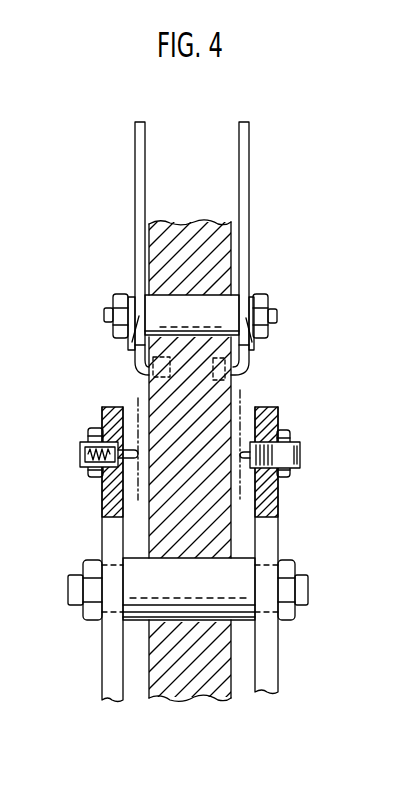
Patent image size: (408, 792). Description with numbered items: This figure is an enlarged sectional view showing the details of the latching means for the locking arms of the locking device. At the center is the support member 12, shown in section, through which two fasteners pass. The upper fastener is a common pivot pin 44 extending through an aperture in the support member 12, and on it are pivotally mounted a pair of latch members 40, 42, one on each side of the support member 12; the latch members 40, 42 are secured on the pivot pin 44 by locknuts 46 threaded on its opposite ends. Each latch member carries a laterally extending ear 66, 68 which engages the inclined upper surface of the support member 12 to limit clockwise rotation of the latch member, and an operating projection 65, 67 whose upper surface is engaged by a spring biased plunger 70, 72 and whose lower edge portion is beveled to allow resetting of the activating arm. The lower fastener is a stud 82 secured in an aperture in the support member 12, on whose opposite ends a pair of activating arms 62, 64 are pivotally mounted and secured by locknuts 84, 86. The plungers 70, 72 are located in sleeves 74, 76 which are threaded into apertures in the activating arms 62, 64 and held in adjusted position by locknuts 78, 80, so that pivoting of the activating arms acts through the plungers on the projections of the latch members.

The support member 12 is at (173, 688).
The latch member 40 is at (243, 157).
The latch member 42 is at (137, 143).
The pivot pin 44 is at (104, 315).
The locknuts 46 is at (116, 293).
The activating arm 62 is at (270, 526).
The activating arm 64 is at (110, 522).
The operating projection 65 is at (256, 338).
The laterally extending ear 66 is at (240, 382).
The operating projection 67 is at (134, 321).
The laterally extending ear 68 is at (150, 380).
The spring biased plunger 70 is at (245, 468).
The spring biased plunger 72 is at (104, 480).
The sleeve 74 is at (300, 453).
The sleeve 76 is at (80, 449).
The locknut 78 is at (285, 430).
The locknut 80 is at (97, 428).
The stud 82 is at (137, 623).
The locknut 84 is at (282, 620).
The locknut 86 is at (93, 620).